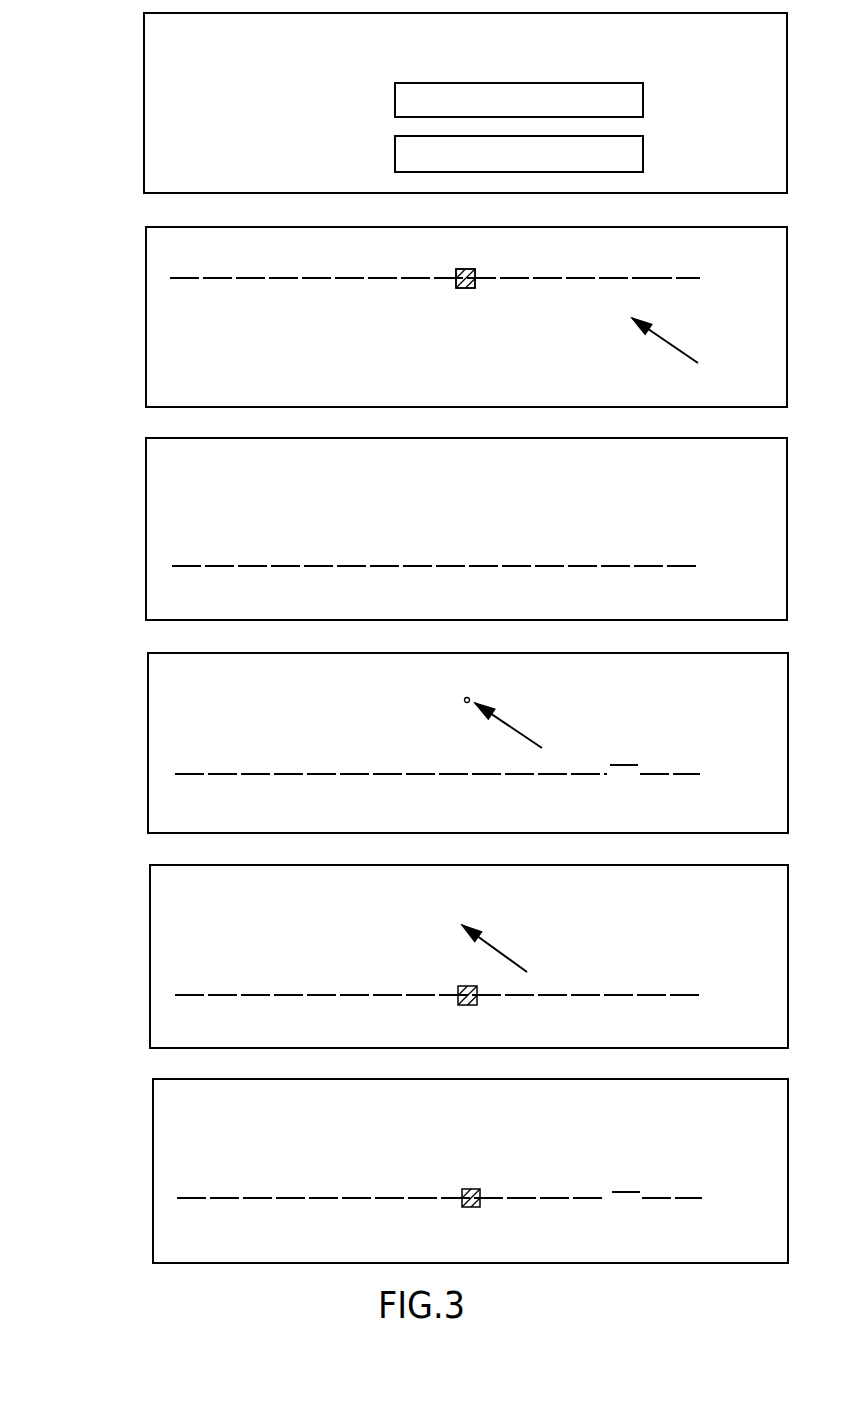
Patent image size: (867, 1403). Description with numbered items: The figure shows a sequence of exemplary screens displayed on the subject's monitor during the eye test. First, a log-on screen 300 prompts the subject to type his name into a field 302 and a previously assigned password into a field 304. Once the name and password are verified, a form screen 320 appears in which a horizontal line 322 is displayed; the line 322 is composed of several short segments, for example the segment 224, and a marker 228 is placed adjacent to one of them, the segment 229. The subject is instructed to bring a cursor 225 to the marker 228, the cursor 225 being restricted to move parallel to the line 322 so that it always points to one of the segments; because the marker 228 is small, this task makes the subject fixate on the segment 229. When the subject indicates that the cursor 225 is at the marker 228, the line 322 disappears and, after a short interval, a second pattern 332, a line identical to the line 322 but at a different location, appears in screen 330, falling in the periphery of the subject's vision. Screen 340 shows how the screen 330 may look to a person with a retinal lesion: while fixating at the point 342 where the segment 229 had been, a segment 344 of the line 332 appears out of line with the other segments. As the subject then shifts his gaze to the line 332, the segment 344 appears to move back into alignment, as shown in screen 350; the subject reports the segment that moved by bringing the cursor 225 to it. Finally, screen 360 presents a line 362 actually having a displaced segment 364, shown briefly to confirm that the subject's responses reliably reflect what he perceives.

The log-on screen 300 is at (143, 104).
The name field 302 is at (645, 100).
The password field 304 is at (645, 154).
The form screen 320 is at (146, 317).
The segment 224 is at (592, 277).
The cursor 225 is at (672, 345).
The marker 228 is at (466, 288).
The segment 229 is at (456, 271).
The line 322 is at (687, 272).
The screen 330 is at (146, 529).
The second pattern 332 is at (687, 570).
The screen 340 is at (148, 743).
The point 342 is at (467, 705).
The segment 344 is at (625, 765).
The screen 350 is at (150, 956).
The screen 360 is at (153, 1169).
The line 362 is at (688, 1204).
The displaced segment 364 is at (627, 1192).